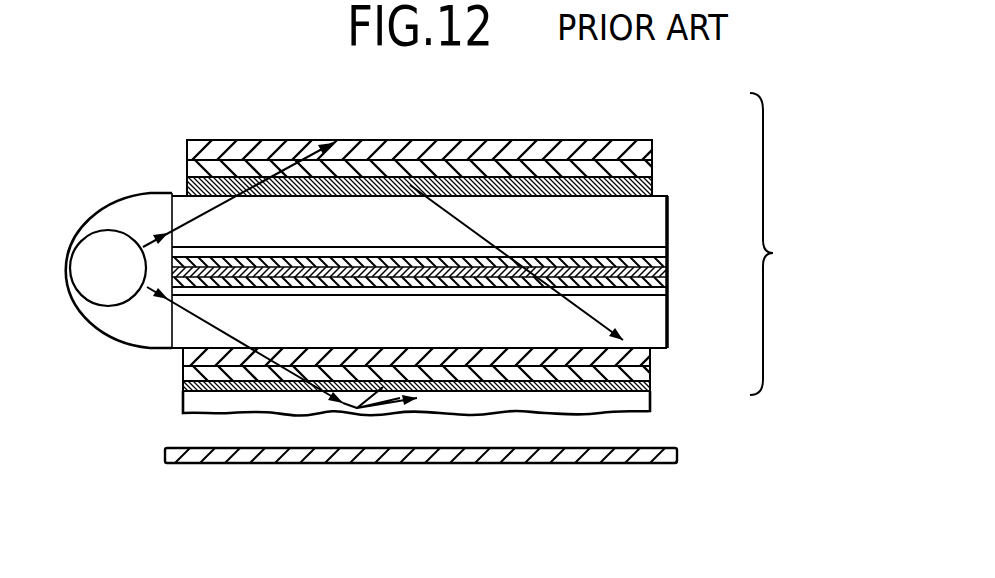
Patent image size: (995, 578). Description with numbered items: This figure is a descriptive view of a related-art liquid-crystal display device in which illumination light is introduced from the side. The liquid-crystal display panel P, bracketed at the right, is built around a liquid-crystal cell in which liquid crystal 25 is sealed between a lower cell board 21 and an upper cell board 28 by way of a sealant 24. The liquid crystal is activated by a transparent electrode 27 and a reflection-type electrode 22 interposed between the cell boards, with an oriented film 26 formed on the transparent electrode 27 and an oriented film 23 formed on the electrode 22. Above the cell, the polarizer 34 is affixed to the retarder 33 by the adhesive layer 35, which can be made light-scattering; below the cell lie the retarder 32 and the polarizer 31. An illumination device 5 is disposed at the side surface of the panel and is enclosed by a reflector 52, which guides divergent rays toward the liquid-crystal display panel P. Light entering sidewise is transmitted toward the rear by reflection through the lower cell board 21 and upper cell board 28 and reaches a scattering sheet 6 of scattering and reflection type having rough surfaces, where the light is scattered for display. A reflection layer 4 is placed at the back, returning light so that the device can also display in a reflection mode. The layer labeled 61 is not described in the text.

The reflector 52 is at (103, 203).
The illumination device 5 is at (102, 293).
The polarizer 34 is at (652, 147).
The adhesive layer 35 is at (652, 165).
The retarder 33 is at (652, 183).
The upper cell board 28 is at (667, 205).
The transparent electrode 27 is at (667, 248).
The oriented film 26 is at (667, 265).
The liquid crystal 25 is at (565, 263).
The sealant 24 is at (667, 278).
The oriented film 23 is at (667, 290).
The reflection-type electrode 22 is at (667, 313).
The lower cell board 21 is at (652, 332).
The retarder 32 is at (650, 367).
The polarizer 31 is at (650, 377).
The reflective layer 61 is at (650, 402).
The scattering sheet 6 is at (650, 407).
The reflection layer 4 is at (573, 463).
The liquid-crystal display panel P is at (773, 244).